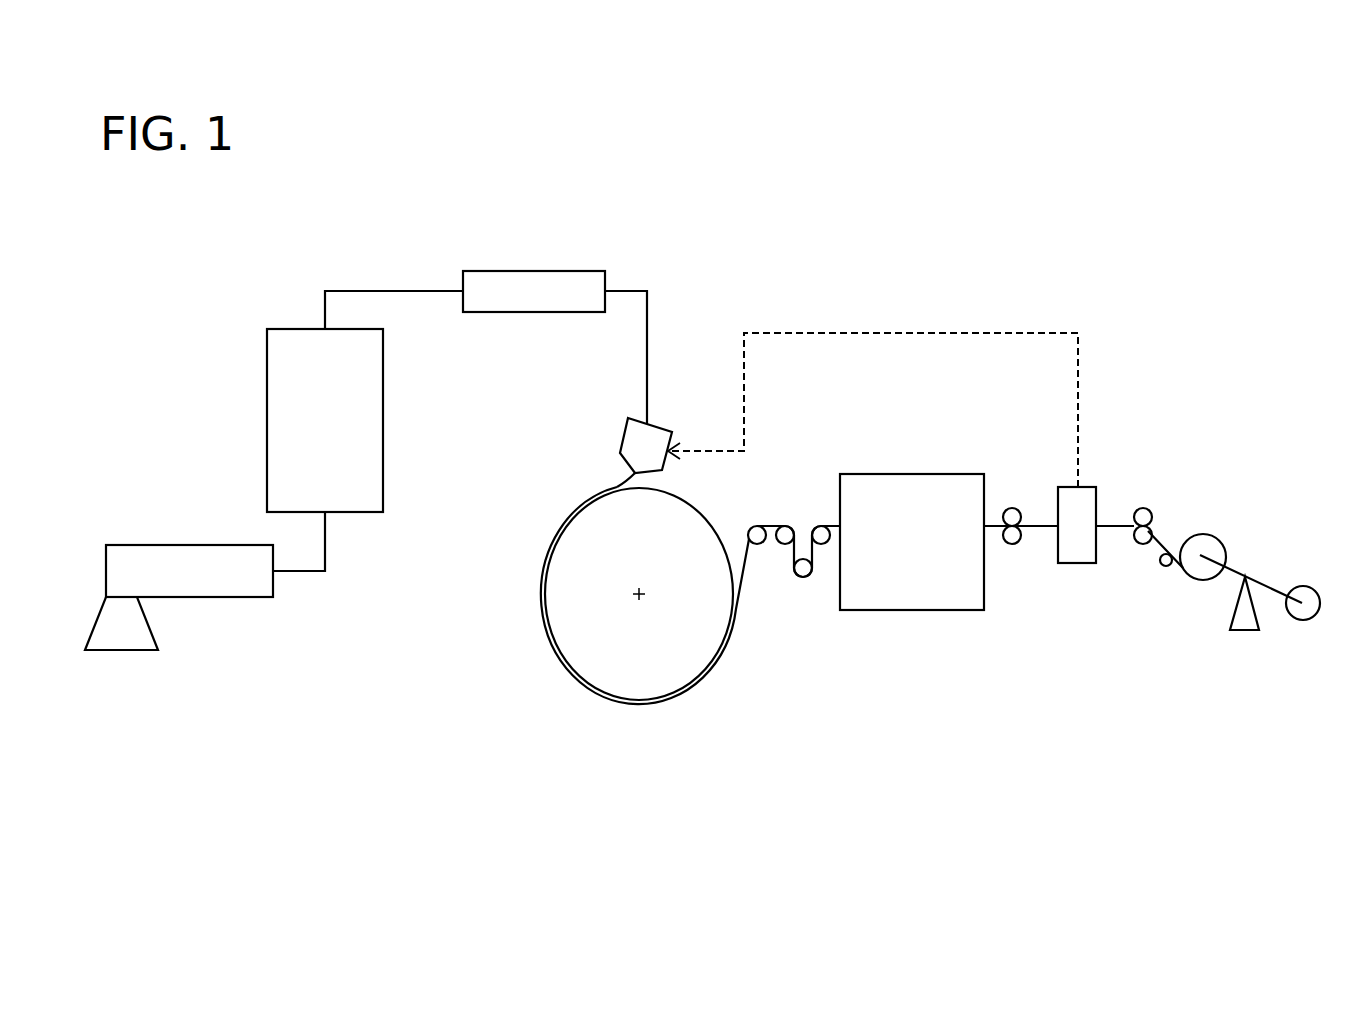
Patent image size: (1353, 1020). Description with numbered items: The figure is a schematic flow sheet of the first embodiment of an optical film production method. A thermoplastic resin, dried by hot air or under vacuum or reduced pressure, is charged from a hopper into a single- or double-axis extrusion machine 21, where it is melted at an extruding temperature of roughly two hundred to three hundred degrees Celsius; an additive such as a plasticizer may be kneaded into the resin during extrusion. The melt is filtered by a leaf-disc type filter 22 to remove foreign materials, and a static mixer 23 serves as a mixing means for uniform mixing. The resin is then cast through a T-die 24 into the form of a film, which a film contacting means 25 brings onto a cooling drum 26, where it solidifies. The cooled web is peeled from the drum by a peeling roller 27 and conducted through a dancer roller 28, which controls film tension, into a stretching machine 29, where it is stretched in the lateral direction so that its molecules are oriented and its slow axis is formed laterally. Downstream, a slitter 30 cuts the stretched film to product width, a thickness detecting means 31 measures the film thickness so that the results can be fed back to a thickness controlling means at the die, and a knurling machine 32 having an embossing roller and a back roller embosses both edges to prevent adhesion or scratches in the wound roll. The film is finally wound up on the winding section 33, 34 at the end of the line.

The extrusion machine 21 is at (122, 637).
The leaf-disc type filter 22 is at (273, 367).
The static mixer 23 is at (501, 280).
The T-die 24 is at (636, 437).
The film contacting means 25 is at (604, 483).
The cooling drum 26 is at (567, 593).
The peeling roller 27 is at (757, 525).
The dancer roller 28 is at (803, 577).
The stretching machine 29 is at (889, 475).
The slitter 30 is at (1012, 545).
The thickness detecting means 31 is at (1088, 495).
The knurling machine 32 is at (1145, 510).
The winder support 33 is at (1245, 625).
The wind-up roll 34 is at (1203, 540).